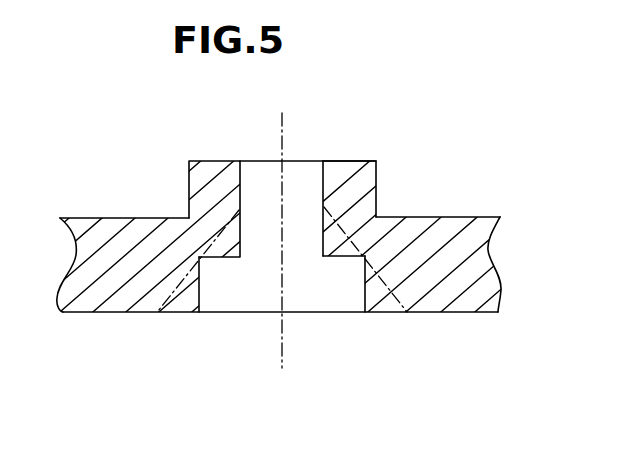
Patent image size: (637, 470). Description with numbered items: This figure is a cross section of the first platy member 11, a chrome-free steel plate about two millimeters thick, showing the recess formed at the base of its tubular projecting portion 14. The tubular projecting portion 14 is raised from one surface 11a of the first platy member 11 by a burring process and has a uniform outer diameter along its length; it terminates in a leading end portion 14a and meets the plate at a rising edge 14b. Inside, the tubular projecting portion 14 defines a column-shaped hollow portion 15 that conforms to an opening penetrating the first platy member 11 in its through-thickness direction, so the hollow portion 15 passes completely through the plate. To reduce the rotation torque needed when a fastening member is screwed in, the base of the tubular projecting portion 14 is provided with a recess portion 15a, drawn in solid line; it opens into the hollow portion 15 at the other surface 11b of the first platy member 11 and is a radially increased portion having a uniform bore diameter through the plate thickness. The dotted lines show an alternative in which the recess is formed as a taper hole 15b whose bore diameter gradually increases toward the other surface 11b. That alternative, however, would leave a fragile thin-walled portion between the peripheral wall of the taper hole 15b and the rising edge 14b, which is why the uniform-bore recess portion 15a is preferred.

The first platy member 11 is at (480, 258).
The one surface of the first platy member 11a is at (105, 216).
The other surface of the first platy member 11b is at (457, 312).
The tubular projecting portion 14 is at (358, 190).
The leading end portion of the tubular projecting portion 14a is at (357, 158).
The rising edge of the tubular projecting portion 14b is at (187, 215).
The hollow portion 15 is at (304, 160).
The recess portion 15a is at (218, 312).
The taper hole 15b is at (385, 287).